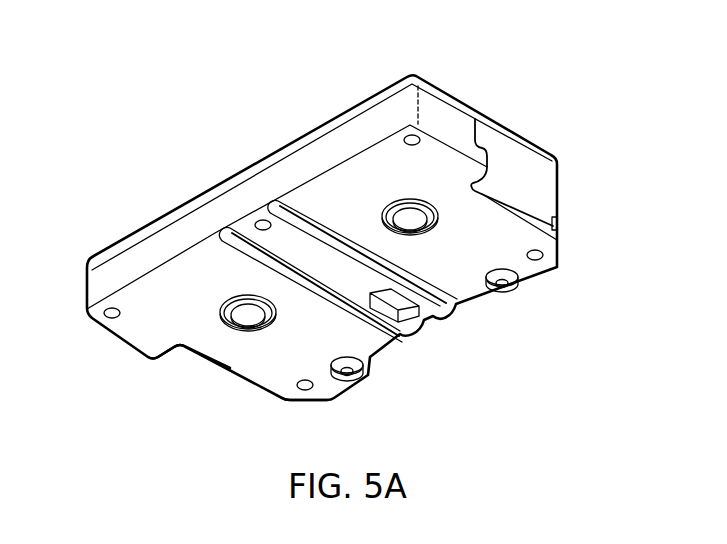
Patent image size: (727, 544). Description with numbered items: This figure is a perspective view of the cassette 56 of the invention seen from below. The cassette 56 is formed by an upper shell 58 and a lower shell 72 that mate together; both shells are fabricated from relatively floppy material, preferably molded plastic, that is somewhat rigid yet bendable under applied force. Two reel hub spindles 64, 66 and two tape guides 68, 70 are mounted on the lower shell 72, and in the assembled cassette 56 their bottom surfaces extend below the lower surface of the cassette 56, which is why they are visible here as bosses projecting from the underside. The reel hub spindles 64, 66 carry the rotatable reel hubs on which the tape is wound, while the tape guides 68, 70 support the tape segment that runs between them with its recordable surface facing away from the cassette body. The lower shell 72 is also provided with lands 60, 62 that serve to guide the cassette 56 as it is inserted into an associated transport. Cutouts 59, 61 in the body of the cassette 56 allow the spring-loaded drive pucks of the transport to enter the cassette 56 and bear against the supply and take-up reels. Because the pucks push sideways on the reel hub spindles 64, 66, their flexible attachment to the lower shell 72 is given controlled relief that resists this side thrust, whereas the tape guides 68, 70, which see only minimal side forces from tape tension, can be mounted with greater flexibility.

The cassette 56 is at (372, 85).
The upper shell 58 is at (280, 150).
The cutout 59 is at (523, 180).
The land 60 is at (400, 338).
The cutout 61 is at (207, 362).
The land 62 is at (452, 308).
The reel hub spindle 64 is at (250, 317).
The reel hub spindle 66 is at (407, 217).
The tape guide 68 is at (352, 372).
The tape guide 70 is at (518, 293).
The lower shell 72 is at (275, 358).